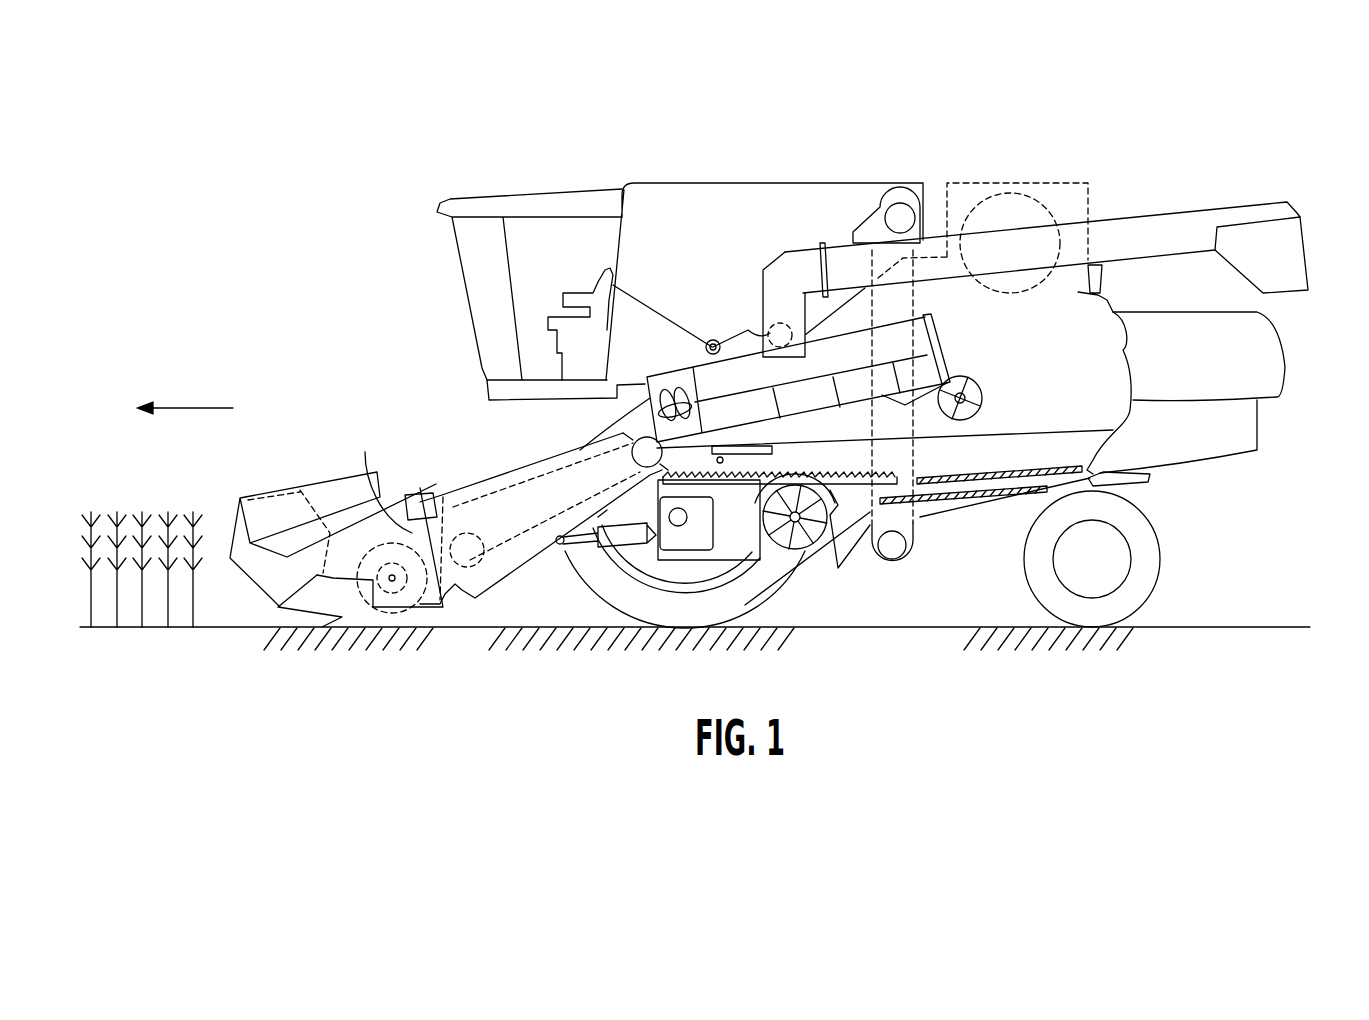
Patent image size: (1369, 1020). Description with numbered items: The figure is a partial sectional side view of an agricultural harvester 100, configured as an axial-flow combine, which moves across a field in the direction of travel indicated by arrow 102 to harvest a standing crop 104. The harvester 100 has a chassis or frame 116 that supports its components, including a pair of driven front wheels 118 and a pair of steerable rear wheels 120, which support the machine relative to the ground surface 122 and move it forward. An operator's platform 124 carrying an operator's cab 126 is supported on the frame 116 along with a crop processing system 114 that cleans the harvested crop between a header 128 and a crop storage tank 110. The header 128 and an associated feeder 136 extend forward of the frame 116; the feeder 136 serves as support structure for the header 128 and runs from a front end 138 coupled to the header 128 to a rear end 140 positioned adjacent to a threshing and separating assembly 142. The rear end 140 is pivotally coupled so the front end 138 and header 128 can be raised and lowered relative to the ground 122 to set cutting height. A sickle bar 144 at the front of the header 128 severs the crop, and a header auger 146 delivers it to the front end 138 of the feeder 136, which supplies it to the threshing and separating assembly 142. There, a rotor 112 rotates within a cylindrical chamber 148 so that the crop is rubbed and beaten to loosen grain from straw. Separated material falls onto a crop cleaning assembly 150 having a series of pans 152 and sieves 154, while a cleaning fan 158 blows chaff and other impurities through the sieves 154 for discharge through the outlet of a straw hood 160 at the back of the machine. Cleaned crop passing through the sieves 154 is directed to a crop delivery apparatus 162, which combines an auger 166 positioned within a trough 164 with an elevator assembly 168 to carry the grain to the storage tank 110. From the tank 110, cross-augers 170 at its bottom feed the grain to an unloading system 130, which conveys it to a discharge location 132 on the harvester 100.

The agricultural harvester 100 is at (327, 213).
The direction of travel 102 is at (193, 407).
The standing crop 104 is at (87, 533).
The crop storage tank 110 is at (778, 197).
The rotor 112 is at (673, 393).
The crop processing system 114 is at (1015, 434).
The frame 116 is at (1103, 480).
The front wheels 118 is at (623, 600).
The rear wheels 120 is at (1142, 588).
The ground surface 122 is at (1257, 627).
The operator's platform 124 is at (493, 390).
The operator's cab 126 is at (480, 302).
The header 128 is at (317, 430).
The unloading system 130 is at (1170, 227).
The discharge location 132 is at (1319, 244).
The feeder 136 is at (462, 465).
The front end 138 is at (380, 479).
The rear end 140 is at (610, 440).
The threshing and separating assembly 142 is at (668, 363).
The sickle bar 144 is at (308, 603).
The header auger 146 is at (402, 595).
The cylindrical chamber 148 is at (826, 362).
The crop cleaning assembly 150 is at (865, 586).
The pans 152 is at (807, 559).
The sieves 154 is at (903, 478).
The cleaning fan 158 is at (790, 547).
The straw hood 160 is at (1270, 380).
The crop delivery apparatus 162 is at (944, 298).
The trough 164 is at (913, 550).
The auger 166 is at (893, 560).
The elevator assembly 168 is at (887, 303).
The cross-augers 170 is at (780, 323).